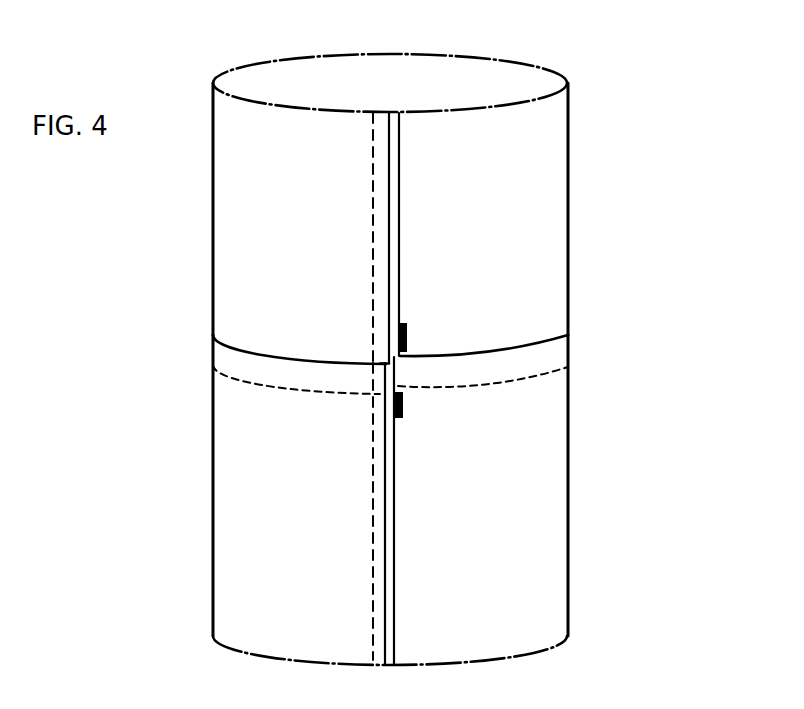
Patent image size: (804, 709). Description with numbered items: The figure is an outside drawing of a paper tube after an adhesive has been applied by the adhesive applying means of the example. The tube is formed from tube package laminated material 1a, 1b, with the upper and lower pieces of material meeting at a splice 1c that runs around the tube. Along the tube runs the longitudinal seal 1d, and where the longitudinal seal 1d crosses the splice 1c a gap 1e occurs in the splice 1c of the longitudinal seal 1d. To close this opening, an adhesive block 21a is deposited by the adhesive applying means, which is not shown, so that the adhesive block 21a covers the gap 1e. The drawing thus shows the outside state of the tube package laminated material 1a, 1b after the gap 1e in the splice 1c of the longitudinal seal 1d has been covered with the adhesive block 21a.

The tube package laminated material 1a is at (570, 198).
The tube package laminated material 1b is at (570, 509).
The splice 1c is at (570, 350).
The longitudinal seal 1d is at (383, 112).
The gap 1e is at (394, 345).
The adhesive block 21a is at (405, 335).